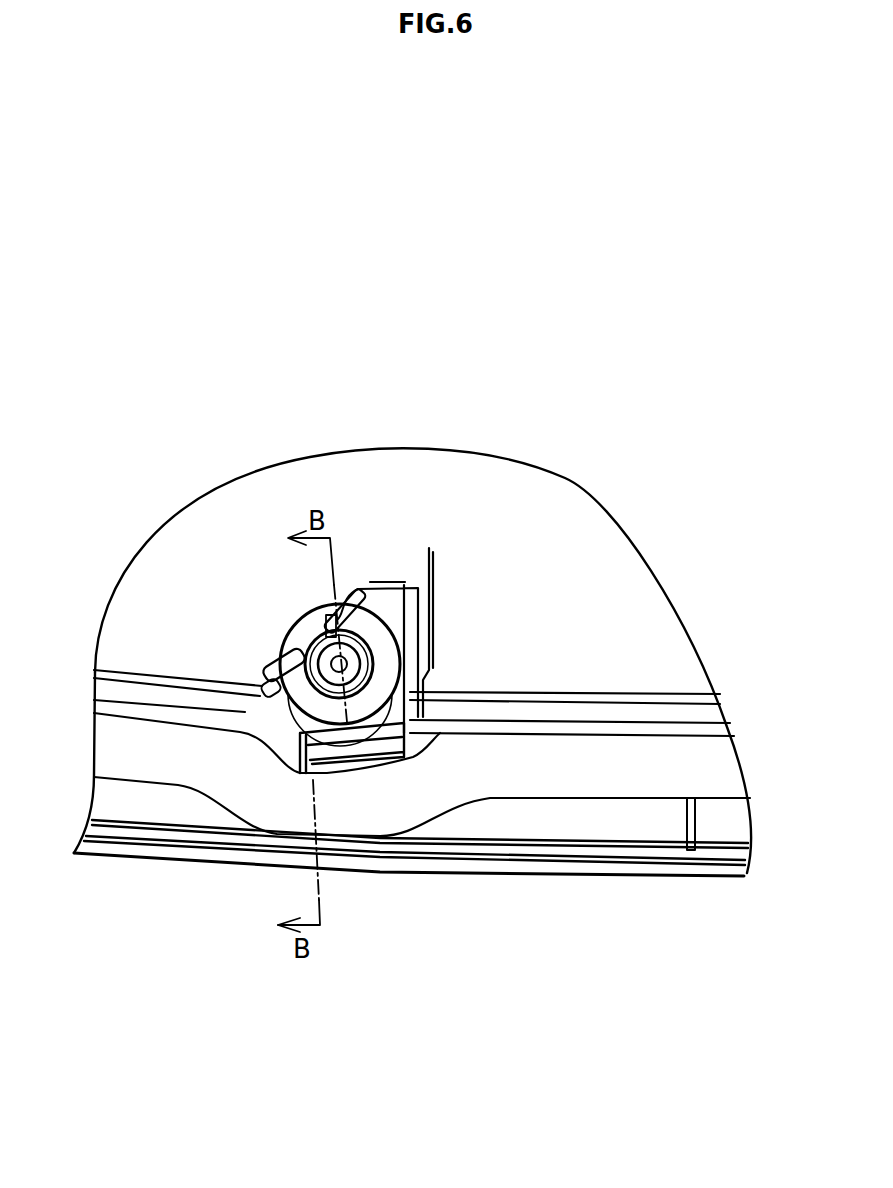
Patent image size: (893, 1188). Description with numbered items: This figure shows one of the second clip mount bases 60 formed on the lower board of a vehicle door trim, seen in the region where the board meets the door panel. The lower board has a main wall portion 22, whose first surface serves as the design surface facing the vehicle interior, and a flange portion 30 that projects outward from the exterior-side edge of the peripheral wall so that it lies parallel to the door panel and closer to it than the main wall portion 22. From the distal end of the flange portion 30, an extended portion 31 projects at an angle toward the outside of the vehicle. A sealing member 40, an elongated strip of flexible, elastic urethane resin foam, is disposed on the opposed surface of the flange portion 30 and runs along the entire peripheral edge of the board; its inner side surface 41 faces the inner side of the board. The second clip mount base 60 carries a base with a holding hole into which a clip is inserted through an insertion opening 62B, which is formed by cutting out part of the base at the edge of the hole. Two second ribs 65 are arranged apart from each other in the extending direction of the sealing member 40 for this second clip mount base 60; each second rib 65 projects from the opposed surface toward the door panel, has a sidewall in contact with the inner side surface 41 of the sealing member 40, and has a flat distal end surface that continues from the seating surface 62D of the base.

The main wall portion 22 is at (578, 543).
The flange portion 30 is at (577, 813).
The extended portion 31 is at (189, 857).
The sealing member 40 is at (647, 778).
The inner side surface 41 is at (437, 742).
The second clip mount base 60 is at (397, 563).
The insertion opening 62B is at (305, 627).
The seating surface 62D is at (387, 608).
The second rib 65 is at (333, 773).